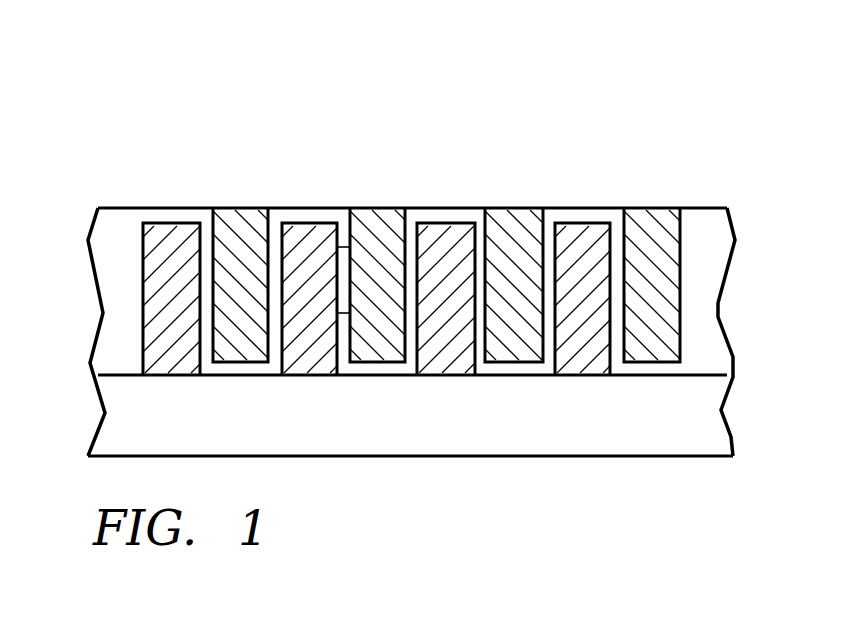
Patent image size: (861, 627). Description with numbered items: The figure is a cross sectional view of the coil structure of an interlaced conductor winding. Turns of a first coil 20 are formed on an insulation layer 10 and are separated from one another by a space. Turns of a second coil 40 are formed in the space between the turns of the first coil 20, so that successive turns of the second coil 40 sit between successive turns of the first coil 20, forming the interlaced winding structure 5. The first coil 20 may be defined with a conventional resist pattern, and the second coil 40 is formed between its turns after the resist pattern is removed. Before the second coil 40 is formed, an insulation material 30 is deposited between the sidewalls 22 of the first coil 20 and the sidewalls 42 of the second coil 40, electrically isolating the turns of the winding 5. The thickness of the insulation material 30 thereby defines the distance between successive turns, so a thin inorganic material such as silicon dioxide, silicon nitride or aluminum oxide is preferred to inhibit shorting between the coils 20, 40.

The interlaced winding structure 5 is at (85, 191).
The insulation layer 10 is at (697, 407).
The first coil 20 is at (176, 229).
The sidewalls of the first coil 22 is at (350, 247).
The insulation material 30 is at (478, 298).
The second coil 40 is at (250, 352).
The sidewalls of the second coil 42 is at (342, 313).